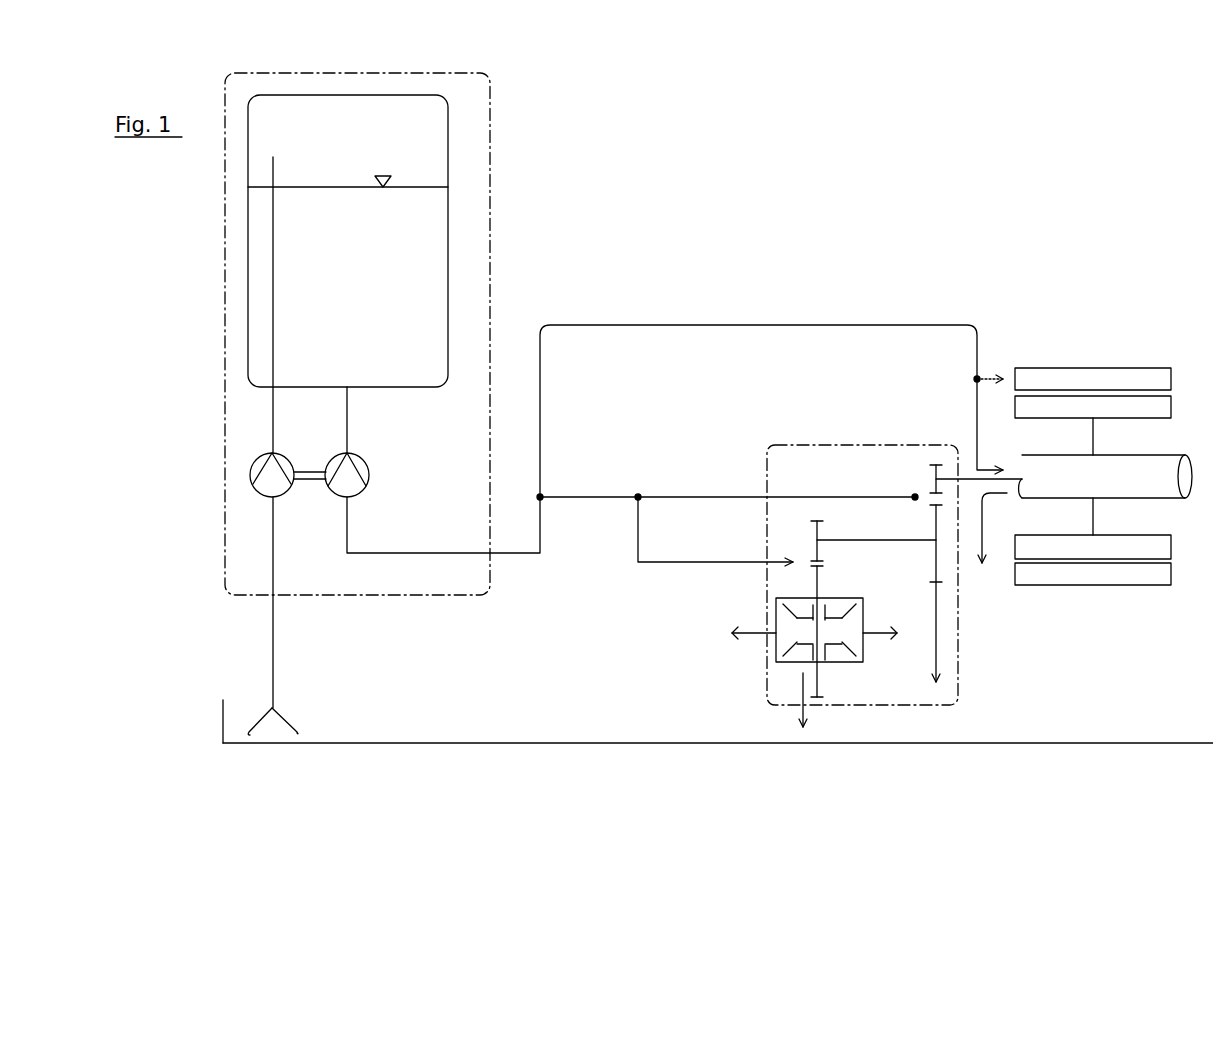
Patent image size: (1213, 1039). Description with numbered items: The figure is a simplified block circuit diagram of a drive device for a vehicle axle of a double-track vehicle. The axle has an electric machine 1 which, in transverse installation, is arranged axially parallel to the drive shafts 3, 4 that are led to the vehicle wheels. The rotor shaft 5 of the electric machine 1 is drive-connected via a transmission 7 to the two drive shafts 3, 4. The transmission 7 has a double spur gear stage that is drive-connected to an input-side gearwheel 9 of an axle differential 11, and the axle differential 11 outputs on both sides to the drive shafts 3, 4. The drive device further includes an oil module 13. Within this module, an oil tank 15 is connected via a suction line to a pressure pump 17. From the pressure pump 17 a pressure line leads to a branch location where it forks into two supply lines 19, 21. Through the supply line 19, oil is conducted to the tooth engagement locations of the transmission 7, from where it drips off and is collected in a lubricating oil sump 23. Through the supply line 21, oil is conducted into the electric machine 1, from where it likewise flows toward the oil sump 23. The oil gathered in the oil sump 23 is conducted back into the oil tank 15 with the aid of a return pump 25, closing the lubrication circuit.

The electric machine 1 is at (1063, 355).
The drive shaft 3 is at (755, 636).
The drive shaft 4 is at (880, 630).
The rotor shaft 5 is at (1127, 453).
The transmission 7 is at (840, 443).
The input-side gearwheel 9 is at (821, 684).
The axle differential 11 is at (790, 662).
The oil module 13 is at (492, 84).
The oil tank 15 is at (448, 157).
The pressure pump 17 is at (332, 497).
The supply line 19 is at (583, 495).
The supply line 21 is at (634, 323).
The lubricating oil sump 23 is at (222, 717).
The return pump 25 is at (256, 491).